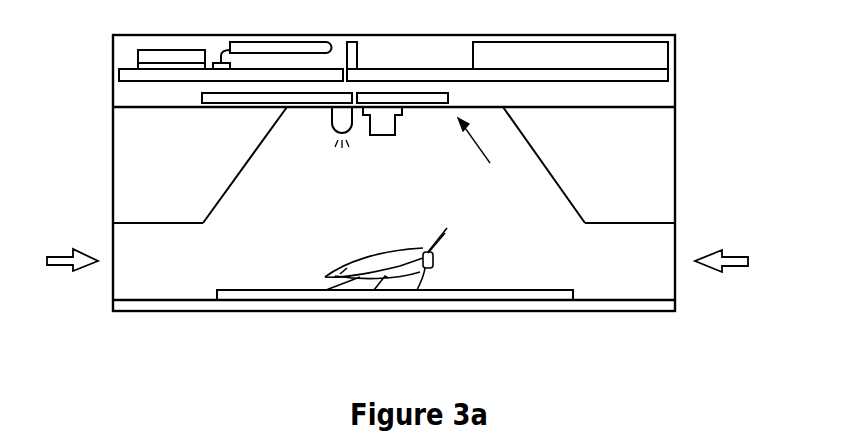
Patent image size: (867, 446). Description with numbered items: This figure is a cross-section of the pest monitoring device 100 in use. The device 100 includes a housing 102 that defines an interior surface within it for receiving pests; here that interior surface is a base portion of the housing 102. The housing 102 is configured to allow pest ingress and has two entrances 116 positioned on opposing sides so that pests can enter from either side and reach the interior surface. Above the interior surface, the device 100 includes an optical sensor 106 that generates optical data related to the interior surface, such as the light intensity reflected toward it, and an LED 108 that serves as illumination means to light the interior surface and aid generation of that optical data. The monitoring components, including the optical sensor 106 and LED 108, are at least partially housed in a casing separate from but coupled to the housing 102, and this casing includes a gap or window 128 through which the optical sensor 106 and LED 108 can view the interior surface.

The pest monitoring device 100 is at (555, 297).
The housing 102 is at (660, 96).
The optical sensor 106 is at (385, 135).
The LED 108 is at (332, 133).
The entrances 116 is at (123, 240).
The window 128 is at (489, 155).